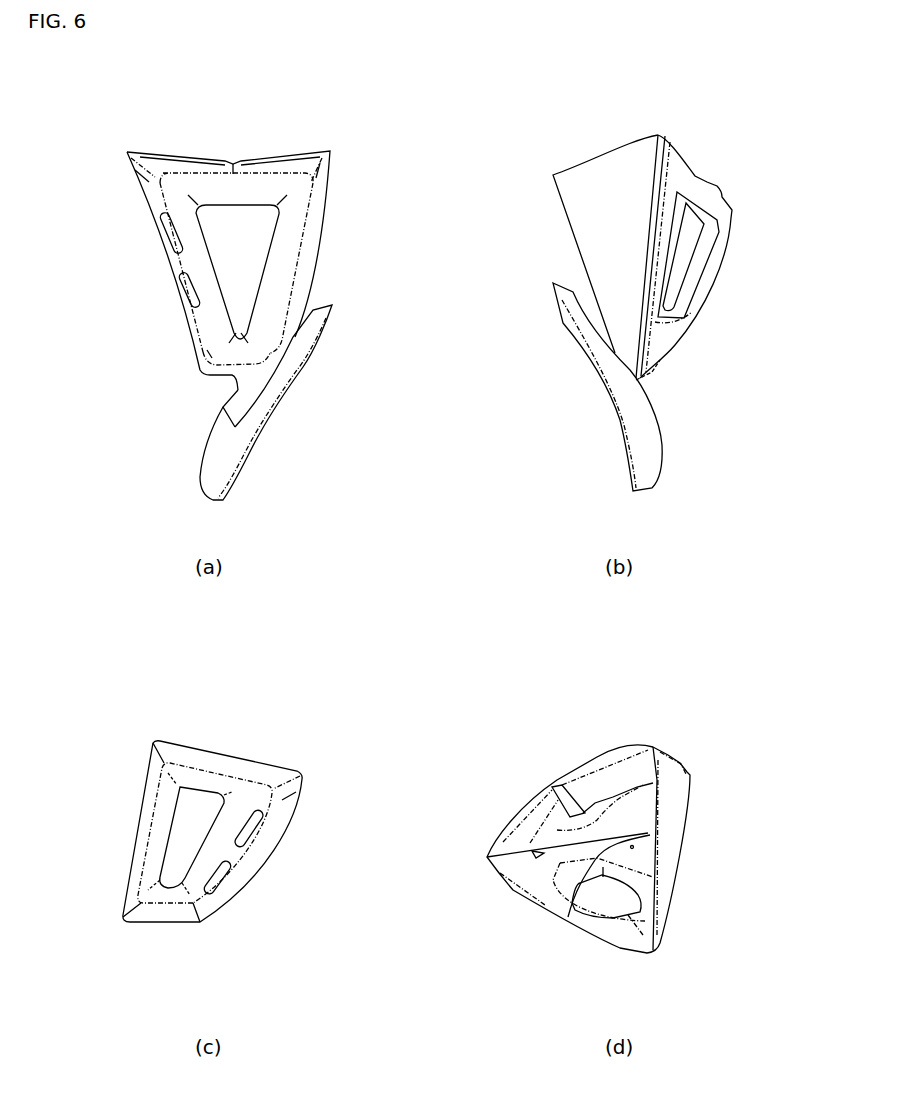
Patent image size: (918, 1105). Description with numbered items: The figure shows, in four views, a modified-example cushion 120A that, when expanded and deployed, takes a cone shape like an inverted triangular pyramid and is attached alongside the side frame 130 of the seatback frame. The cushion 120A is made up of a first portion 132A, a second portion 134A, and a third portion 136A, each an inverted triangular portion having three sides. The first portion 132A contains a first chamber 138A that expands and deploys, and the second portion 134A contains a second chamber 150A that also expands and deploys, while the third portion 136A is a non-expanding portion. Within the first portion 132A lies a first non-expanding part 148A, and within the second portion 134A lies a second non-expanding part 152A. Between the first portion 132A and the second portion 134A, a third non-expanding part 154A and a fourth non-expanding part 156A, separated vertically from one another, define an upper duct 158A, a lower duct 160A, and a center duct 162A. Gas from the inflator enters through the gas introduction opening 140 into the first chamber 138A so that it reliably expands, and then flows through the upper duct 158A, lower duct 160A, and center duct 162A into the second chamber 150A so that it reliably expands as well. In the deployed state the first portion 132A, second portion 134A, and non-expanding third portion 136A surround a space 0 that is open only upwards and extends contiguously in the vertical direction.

The cushion 120A is at (230, 118).
The side frame 130 is at (225, 470).
The first portion 132A is at (297, 250).
The second portion 134A is at (700, 184).
The third portion 136A is at (240, 156).
The first chamber 138A is at (315, 165).
The gas introduction opening 140 is at (226, 413).
The first non-expanding part 148A is at (265, 225).
The second chamber 150A is at (716, 206).
The second non-expanding part 152A is at (680, 280).
The third non-expanding part 154A is at (172, 240).
The fourth non-expanding part 156A is at (188, 295).
The upper duct 158A is at (145, 187).
The lower duct 160A is at (210, 345).
The center duct 162A is at (183, 262).
The space 0 is at (632, 847).